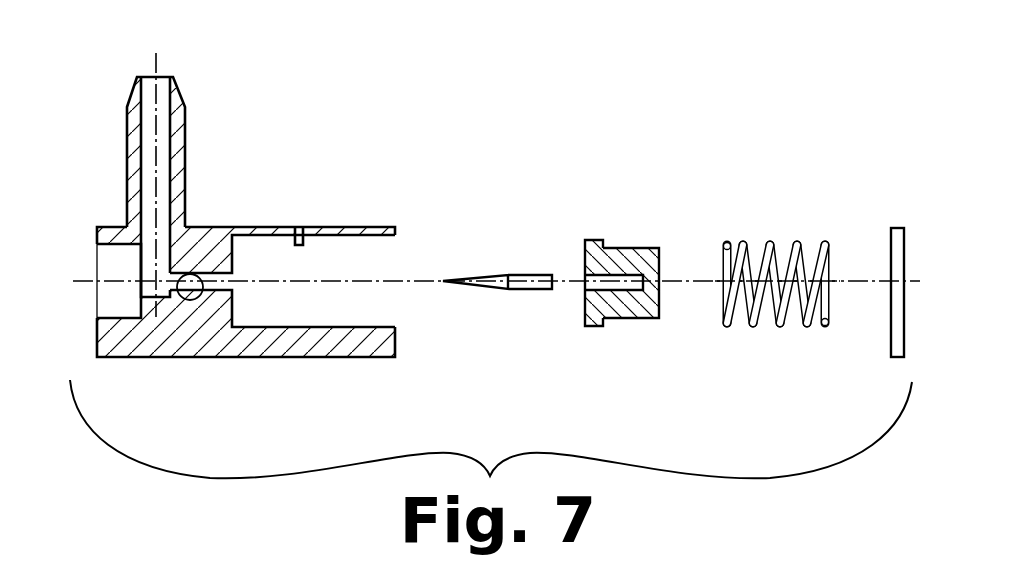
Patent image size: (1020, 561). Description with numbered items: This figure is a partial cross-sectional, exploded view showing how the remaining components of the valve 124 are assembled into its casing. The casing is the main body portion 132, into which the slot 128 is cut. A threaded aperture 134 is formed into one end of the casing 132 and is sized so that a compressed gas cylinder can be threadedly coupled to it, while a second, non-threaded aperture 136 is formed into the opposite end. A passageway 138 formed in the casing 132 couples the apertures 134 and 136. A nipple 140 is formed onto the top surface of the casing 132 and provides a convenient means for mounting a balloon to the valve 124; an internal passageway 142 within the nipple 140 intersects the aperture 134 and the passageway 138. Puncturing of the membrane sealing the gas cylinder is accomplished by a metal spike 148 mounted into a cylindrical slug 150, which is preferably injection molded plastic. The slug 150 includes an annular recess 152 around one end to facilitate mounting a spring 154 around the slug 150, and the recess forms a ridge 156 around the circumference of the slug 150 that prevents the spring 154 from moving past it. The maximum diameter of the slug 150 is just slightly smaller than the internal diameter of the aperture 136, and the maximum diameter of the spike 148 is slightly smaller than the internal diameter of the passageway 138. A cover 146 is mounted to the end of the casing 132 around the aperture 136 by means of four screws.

The valve 124 is at (647, 93).
The slot 128 is at (295, 212).
The main body portion 132 is at (205, 227).
The threaded aperture 134 is at (113, 318).
The non-threaded aperture 136 is at (377, 236).
The passageway 138 is at (198, 299).
The nipple 140 is at (186, 117).
The internal passageway 142 is at (143, 126).
The cover 146 is at (898, 230).
The metal spike 148 is at (515, 277).
The cylindrical slug 150 is at (636, 279).
The annular recess 152 is at (630, 318).
The spring 154 is at (772, 245).
The ridge 156 is at (604, 327).